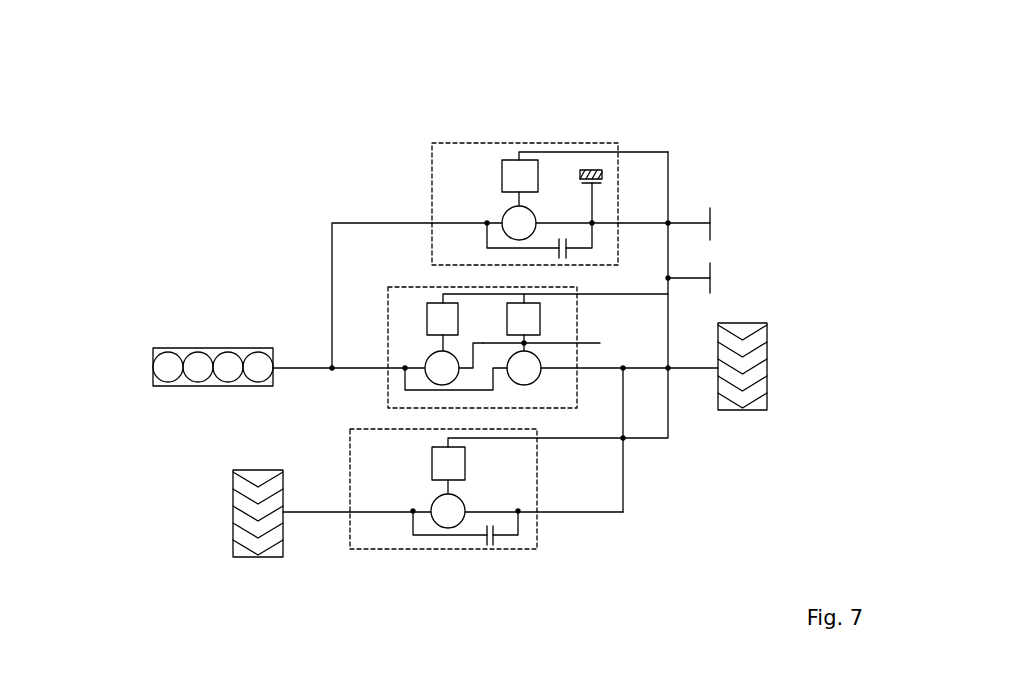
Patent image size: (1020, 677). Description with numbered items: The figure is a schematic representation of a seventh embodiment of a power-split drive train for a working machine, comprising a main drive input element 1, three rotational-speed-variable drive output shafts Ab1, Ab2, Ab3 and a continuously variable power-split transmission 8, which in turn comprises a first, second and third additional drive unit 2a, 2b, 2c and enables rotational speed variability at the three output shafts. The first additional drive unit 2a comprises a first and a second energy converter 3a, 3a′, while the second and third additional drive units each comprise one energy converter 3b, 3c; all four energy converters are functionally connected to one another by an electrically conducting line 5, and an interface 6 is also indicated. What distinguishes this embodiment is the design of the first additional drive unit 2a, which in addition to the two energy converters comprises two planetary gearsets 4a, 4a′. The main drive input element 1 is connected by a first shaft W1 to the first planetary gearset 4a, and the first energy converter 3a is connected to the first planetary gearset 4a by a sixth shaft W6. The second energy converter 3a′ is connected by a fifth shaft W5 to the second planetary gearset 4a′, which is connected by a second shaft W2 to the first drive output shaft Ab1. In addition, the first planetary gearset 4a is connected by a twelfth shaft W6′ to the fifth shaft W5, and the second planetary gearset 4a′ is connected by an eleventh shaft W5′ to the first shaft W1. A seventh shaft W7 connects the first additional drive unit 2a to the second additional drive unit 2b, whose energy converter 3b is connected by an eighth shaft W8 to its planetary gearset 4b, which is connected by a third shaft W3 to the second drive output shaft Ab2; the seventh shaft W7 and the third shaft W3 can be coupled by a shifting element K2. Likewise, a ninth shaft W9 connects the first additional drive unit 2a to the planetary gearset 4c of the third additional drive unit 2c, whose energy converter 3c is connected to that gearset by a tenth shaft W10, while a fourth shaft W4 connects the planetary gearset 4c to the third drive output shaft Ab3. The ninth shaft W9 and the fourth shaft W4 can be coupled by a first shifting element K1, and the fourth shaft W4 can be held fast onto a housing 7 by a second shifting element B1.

The main drive input element 1 is at (142, 347).
The first additional drive unit 2a is at (388, 298).
The second additional drive unit 2b is at (537, 523).
The third additional drive unit 2c is at (487, 266).
The first energy converter of the first additional drive unit 3a is at (427, 320).
The second energy converter of the first additional drive unit 3a′ is at (541, 322).
The energy converter of the second additional drive unit 3b is at (423, 467).
The energy converter of the third additional drive unit 3c is at (513, 166).
The first planetary gearset of the first additional drive unit 4a is at (447, 375).
The second planetary gearset of the first additional drive unit 4a′ is at (535, 382).
The planetary gearset of the second additional drive unit 4b is at (447, 520).
The planetary gearset of the third additional drive unit 4c is at (508, 216).
The electrically conducting line 5 is at (621, 146).
The interface 6 is at (672, 278).
The housing 7 is at (588, 168).
The continuously variable power-split transmission 8 is at (756, 154).
The second shifting element of the third additional drive unit B1 is at (578, 183).
The first shifting element of the third additional drive unit K1 is at (605, 292).
The shifting element of the second additional drive unit K2 is at (489, 553).
The first shaft W1 is at (367, 368).
The second shaft W2 is at (590, 367).
The third shaft W3 is at (358, 490).
The fourth shaft W4 is at (641, 223).
The fifth shaft W5 is at (600, 343).
The eleventh shaft W5′ is at (456, 387).
The sixth shaft W6 is at (430, 347).
The twelfth shaft W6′ is at (483, 345).
The seventh shaft W7 is at (627, 478).
The eighth shaft W8 is at (437, 498).
The ninth shaft W9 is at (330, 288).
The tenth shaft W10 is at (506, 212).
The first drive output shaft Ab1 is at (692, 370).
The second drive output shaft Ab2 is at (317, 512).
The third drive output shaft Ab3 is at (685, 223).